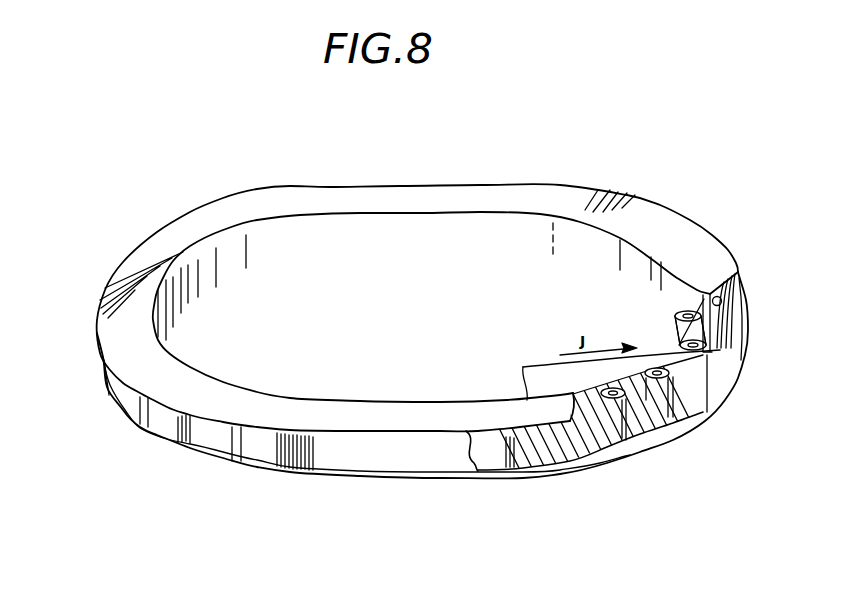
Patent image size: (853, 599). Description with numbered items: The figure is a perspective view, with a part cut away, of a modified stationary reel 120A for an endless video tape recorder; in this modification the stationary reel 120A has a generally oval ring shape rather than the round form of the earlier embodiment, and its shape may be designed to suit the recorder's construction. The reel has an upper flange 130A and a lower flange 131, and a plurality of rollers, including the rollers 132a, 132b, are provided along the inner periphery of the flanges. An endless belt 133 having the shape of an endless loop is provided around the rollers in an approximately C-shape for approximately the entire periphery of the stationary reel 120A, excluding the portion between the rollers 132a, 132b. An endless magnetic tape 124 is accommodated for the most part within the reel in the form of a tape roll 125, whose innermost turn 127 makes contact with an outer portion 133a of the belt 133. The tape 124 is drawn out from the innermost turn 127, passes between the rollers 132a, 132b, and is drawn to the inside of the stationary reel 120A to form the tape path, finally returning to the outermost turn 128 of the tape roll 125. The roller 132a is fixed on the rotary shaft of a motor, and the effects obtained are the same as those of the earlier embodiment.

The stationary reel 120A is at (678, 136).
The upper flange 130A is at (677, 211).
The tape roll 125 is at (437, 457).
The endless magnetic tape 124 is at (531, 366).
The endless belt 133 is at (600, 436).
The roller 132a is at (676, 322).
The roller 132b is at (690, 392).
The outer portion of belt 133a is at (715, 295).
The outermost turn 128 is at (744, 348).
The lower flange 131 is at (740, 367).
The innermost turn 127 is at (705, 365).